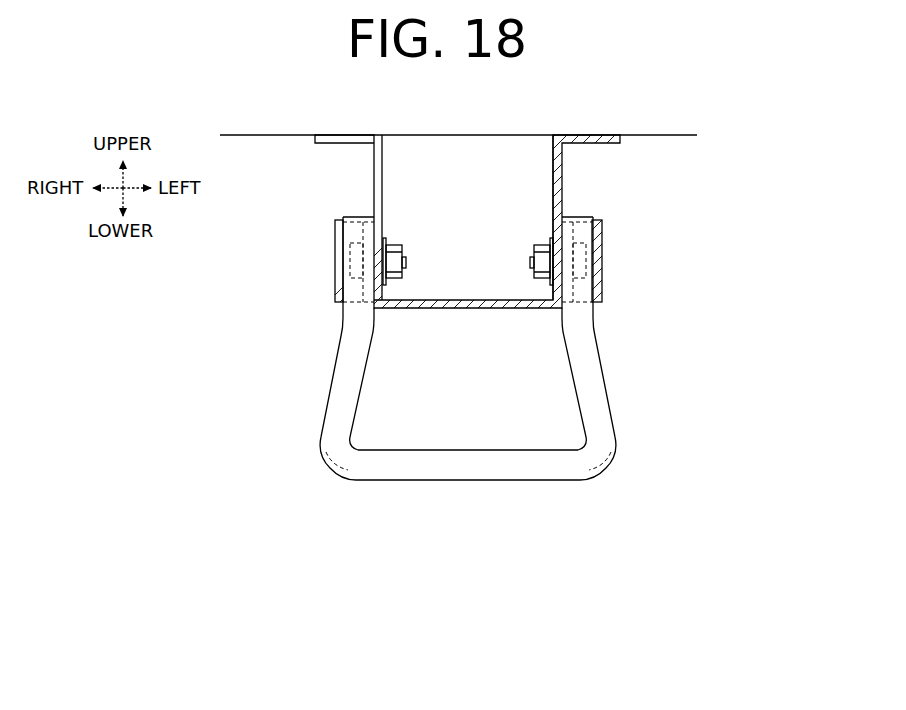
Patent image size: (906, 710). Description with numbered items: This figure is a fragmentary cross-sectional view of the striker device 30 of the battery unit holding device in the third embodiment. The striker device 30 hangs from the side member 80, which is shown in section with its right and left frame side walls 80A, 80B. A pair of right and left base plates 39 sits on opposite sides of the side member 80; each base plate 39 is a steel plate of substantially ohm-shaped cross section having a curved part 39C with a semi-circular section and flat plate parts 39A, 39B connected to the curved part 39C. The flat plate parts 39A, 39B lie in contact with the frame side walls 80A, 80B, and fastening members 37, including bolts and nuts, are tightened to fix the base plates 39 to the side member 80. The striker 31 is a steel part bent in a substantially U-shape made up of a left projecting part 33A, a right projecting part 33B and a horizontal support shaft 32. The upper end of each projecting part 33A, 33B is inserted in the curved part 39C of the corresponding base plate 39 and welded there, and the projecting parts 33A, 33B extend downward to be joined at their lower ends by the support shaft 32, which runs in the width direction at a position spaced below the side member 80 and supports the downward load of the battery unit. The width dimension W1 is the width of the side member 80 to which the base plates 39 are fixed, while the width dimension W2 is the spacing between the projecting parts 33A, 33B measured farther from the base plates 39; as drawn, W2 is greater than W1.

The side member 80 is at (568, 215).
The frame side wall 80A is at (556, 182).
The frame side wall 80B is at (378, 178).
The base plate 39 is at (557, 230).
The flat plate part 39A is at (366, 215).
The flat plate part 39B is at (505, 225).
The curved part 39C is at (337, 290).
The fastening member 37 is at (409, 247).
The striker device 30 is at (486, 374).
The striker 31 is at (472, 374).
The support shaft 32 is at (418, 462).
The left projecting part 33A is at (585, 382).
The right projecting part 33B is at (348, 389).
The width dimension W1 is at (561, 359).
The width dimension W2 is at (587, 437).